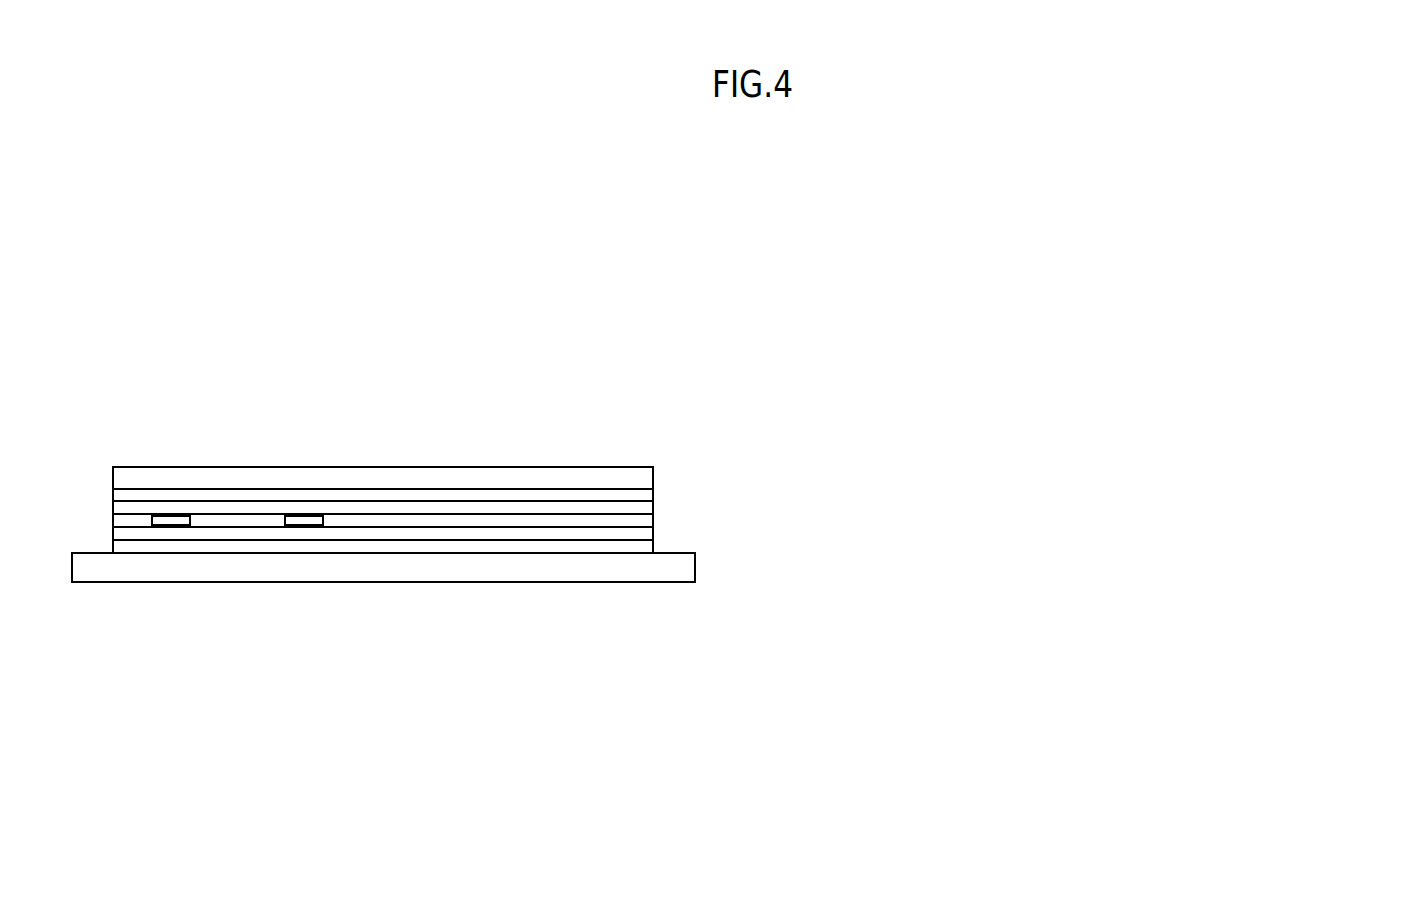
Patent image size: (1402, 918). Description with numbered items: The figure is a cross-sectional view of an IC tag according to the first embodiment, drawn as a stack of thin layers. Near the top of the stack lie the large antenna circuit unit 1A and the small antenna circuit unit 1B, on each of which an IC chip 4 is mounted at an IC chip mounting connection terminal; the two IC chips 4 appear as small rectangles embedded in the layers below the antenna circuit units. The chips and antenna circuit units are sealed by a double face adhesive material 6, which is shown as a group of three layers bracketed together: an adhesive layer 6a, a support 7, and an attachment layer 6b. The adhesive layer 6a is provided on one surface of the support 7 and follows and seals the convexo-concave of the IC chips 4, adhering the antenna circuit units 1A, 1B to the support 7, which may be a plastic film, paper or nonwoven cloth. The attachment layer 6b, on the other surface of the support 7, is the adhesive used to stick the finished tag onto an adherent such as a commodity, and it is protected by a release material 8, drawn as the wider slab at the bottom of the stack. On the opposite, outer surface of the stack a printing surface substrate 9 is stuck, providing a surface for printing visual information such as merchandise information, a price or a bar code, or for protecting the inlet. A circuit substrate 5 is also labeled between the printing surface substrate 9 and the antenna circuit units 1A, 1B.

The large antenna circuit unit 1A is at (113, 505).
The small antenna circuit unit 1B is at (369, 438).
The IC chip 4 is at (302, 515).
The circuit substrate 5 is at (653, 492).
The double face adhesive material 6 is at (943, 490).
The adhesive layer 6a is at (653, 518).
The attachment layer 6b is at (653, 546).
The support 7 is at (458, 535).
The release material 8 is at (620, 583).
The printing surface substrate 9 is at (487, 466).